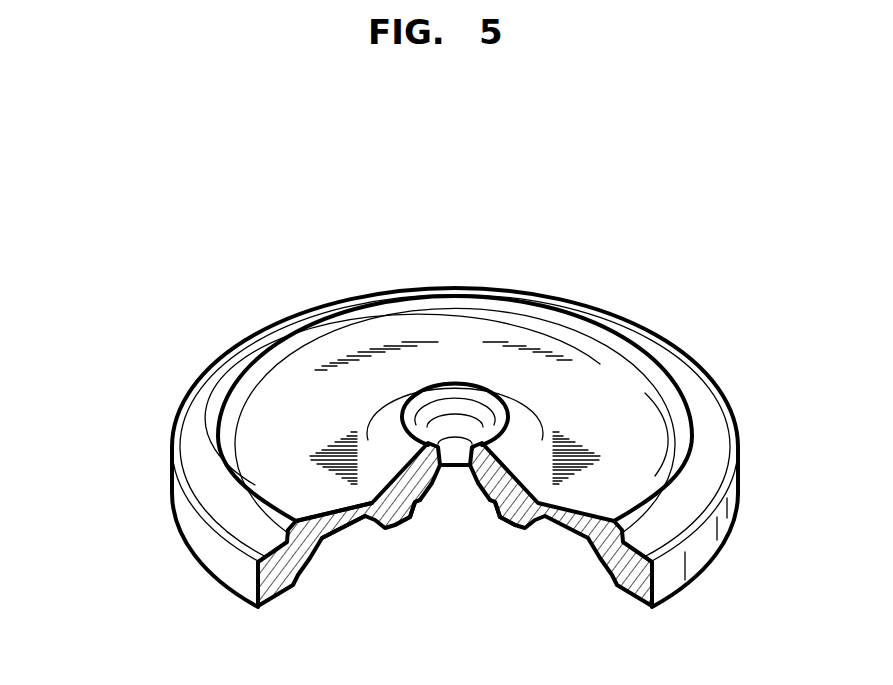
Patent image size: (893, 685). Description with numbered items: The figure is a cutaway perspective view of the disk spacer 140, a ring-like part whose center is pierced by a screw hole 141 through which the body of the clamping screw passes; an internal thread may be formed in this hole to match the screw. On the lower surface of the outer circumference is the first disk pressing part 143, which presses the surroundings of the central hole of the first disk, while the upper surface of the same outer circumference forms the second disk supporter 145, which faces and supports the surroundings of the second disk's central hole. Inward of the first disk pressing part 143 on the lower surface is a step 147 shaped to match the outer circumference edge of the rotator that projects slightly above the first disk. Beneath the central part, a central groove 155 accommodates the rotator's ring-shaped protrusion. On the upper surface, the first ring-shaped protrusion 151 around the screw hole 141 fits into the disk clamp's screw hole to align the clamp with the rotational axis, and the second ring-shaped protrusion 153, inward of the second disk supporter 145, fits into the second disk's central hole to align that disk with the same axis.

The disk spacer 140 is at (168, 275).
The screw hole 141 is at (455, 480).
The first disk pressing part 143 is at (280, 606).
The second disk supporter 145 is at (712, 450).
The step 147 is at (303, 586).
The first ring-shaped protrusion 151 is at (443, 384).
The second ring-shaped protrusion 153 is at (678, 415).
The central groove 155 is at (425, 512).